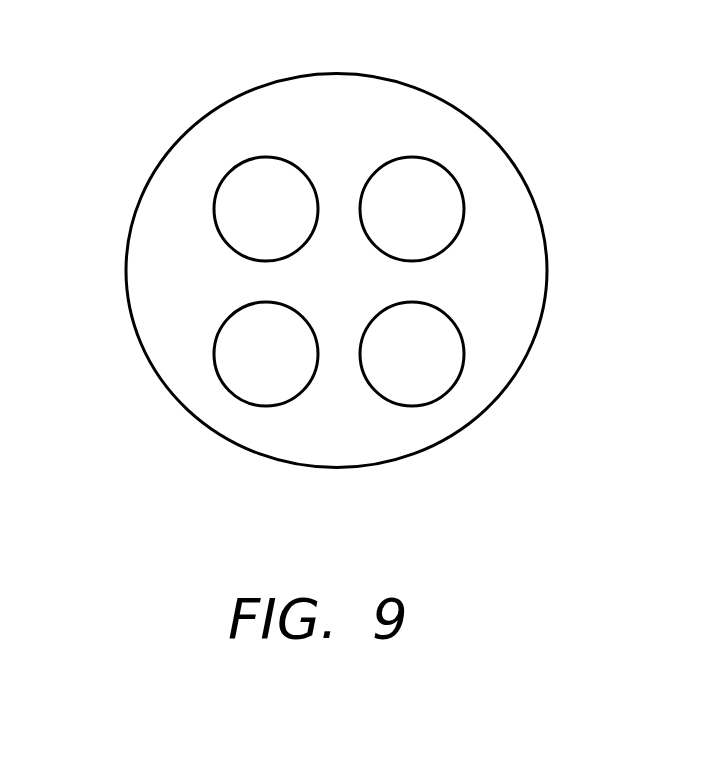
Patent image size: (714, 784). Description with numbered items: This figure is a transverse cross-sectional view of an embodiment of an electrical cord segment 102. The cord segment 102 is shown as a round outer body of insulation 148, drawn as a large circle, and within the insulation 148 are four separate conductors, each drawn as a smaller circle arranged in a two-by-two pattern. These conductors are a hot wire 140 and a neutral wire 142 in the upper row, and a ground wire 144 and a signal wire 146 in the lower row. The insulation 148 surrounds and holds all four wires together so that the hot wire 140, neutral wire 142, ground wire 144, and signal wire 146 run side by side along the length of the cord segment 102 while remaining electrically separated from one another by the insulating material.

The cord segment 102 is at (160, 43).
The hot wire 140 is at (240, 179).
The neutral wire 142 is at (433, 179).
The ground wire 144 is at (257, 373).
The signal wire 146 is at (432, 370).
The insulation 148 is at (508, 251).